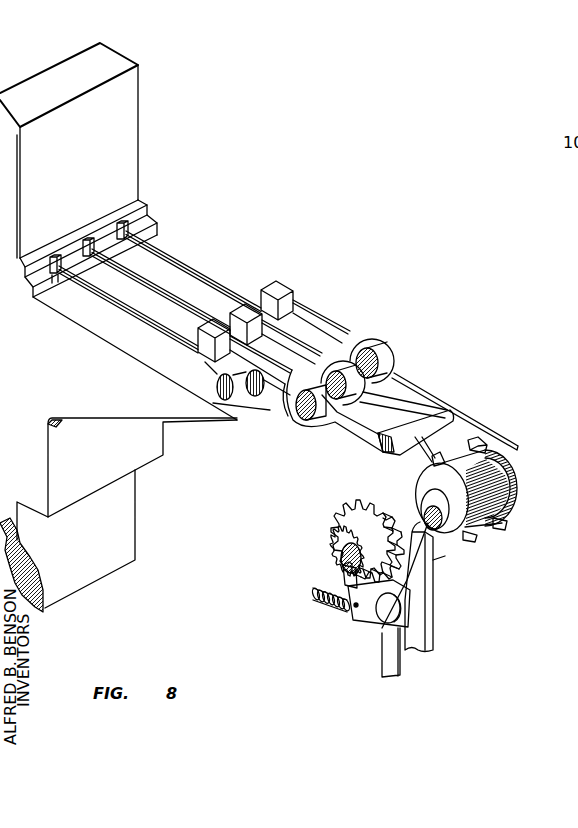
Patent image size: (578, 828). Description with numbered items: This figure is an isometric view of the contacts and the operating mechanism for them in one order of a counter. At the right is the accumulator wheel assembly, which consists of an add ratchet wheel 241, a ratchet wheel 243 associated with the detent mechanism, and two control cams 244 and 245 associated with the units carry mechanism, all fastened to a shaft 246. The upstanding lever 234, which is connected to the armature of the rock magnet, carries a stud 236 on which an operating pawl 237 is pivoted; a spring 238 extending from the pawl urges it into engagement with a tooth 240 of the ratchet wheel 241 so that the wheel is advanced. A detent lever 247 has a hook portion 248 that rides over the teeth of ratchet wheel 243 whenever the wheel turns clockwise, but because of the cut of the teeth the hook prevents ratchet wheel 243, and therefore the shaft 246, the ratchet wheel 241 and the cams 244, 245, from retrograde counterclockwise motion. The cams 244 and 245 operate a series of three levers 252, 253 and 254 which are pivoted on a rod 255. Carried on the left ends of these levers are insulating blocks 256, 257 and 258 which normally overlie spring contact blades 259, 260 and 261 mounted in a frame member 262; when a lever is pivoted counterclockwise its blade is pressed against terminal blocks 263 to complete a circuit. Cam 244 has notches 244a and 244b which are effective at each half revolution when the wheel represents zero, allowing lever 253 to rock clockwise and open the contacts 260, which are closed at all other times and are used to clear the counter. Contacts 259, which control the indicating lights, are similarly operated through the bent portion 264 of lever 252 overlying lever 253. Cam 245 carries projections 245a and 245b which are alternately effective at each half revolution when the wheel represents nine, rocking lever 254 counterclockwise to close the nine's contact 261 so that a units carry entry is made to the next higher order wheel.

The frame member 262 is at (132, 147).
The terminal blocks 263 is at (258, 416).
The spring contact blade 259 is at (118, 302).
The spring contact blade 260 is at (140, 275).
The spring contact blade 261 is at (176, 253).
The insulating block 256 is at (195, 346).
The insulating block 257 is at (250, 302).
The insulating block 258 is at (292, 292).
The lever 252 is at (348, 445).
The lever 253 is at (400, 405).
The lever 254 is at (372, 334).
The rod 255 is at (313, 428).
The bent portion 264 is at (432, 412).
The control cam 244 is at (450, 535).
The notch 244a is at (468, 533).
The notch 244b is at (432, 458).
The control cam 245 is at (512, 497).
The projection 245a is at (507, 518).
The projection 245b is at (487, 447).
The shaft 246 is at (428, 521).
The detent lever 247 is at (423, 621).
The hook portion 248 is at (423, 603).
The upstanding lever 234 is at (395, 677).
The ratchet wheel 243 is at (363, 500).
The add ratchet wheel 241 is at (331, 532).
The tooth 240 is at (343, 578).
The spring 238 is at (313, 605).
The operating pawl 237 is at (357, 617).
The stud 236 is at (388, 618).